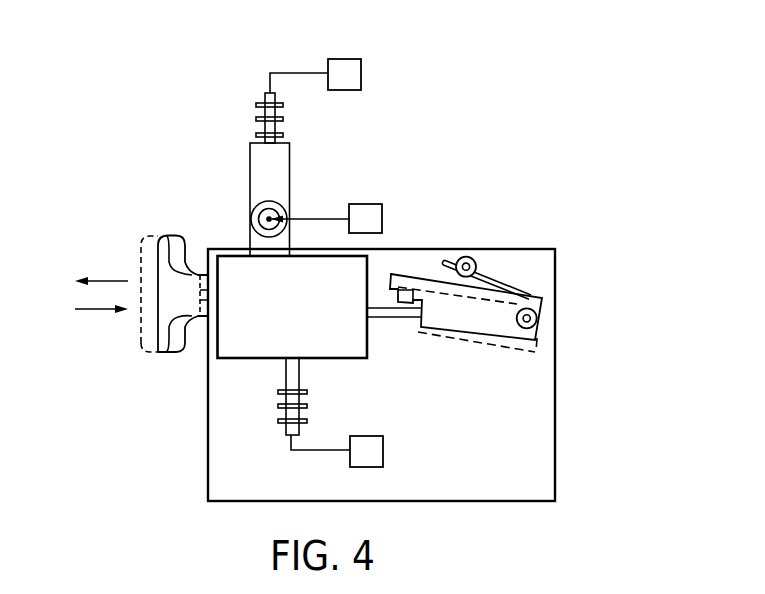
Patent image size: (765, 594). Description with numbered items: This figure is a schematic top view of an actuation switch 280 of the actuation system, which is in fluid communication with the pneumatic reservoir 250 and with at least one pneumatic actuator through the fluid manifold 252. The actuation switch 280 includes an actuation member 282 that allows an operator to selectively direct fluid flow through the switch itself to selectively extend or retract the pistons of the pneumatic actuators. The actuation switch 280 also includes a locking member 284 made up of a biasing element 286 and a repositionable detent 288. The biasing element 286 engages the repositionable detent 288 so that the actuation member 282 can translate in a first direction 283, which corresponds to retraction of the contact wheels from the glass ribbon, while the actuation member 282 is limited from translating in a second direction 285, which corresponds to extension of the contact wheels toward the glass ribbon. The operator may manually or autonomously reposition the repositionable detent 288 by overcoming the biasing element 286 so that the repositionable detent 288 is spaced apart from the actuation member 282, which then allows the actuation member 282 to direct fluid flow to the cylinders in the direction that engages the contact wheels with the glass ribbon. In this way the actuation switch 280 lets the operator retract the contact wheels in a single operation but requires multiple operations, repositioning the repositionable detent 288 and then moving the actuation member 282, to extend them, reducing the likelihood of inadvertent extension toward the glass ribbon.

The pneumatic reservoir 250 is at (367, 204).
The fluid manifold 252 is at (345, 58).
The actuation switch 280 is at (592, 259).
The actuation member 282 is at (166, 353).
The first direction 283 is at (100, 278).
The locking member 284 is at (477, 364).
The second direction 285 is at (100, 311).
The biasing element 286 is at (495, 280).
The repositionable detent 288 is at (403, 272).